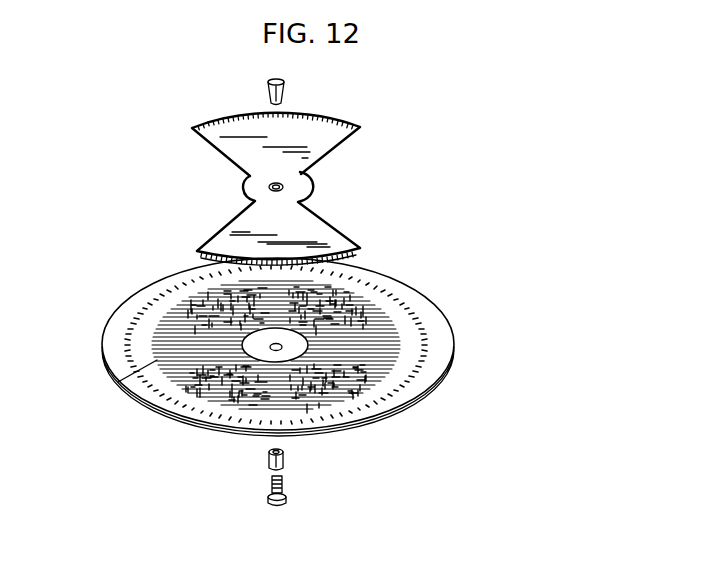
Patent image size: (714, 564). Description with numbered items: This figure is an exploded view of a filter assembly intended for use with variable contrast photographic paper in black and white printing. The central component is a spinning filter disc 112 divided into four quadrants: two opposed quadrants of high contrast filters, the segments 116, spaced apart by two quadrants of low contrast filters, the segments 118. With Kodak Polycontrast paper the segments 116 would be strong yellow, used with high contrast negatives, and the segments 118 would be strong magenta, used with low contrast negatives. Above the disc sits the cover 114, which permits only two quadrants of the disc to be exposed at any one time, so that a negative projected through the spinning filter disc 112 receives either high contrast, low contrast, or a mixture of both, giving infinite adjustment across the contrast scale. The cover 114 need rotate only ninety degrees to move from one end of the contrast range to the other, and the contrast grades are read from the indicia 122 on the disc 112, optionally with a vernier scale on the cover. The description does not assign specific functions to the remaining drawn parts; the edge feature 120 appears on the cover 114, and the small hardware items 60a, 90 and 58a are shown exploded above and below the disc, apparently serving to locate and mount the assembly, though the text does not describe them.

The locating pin 60a is at (286, 85).
The serrated edge of filter segment 120 is at (342, 122).
The cover 114 is at (340, 150).
The segments 116 is at (343, 300).
The filter disc 112 is at (400, 268).
The segments 118 is at (392, 348).
The indicia 122 is at (419, 371).
The spacer sleeve 90 is at (285, 459).
The screw 58a is at (290, 497).